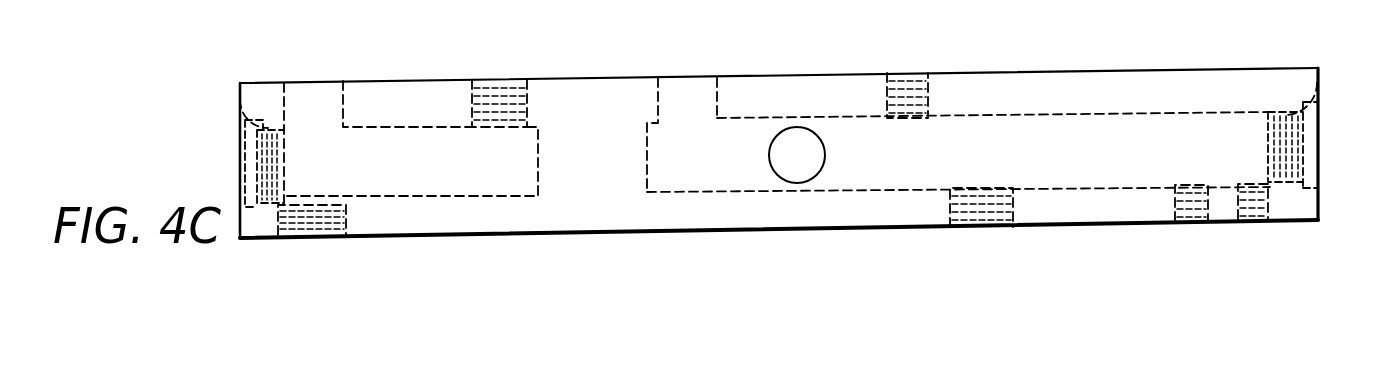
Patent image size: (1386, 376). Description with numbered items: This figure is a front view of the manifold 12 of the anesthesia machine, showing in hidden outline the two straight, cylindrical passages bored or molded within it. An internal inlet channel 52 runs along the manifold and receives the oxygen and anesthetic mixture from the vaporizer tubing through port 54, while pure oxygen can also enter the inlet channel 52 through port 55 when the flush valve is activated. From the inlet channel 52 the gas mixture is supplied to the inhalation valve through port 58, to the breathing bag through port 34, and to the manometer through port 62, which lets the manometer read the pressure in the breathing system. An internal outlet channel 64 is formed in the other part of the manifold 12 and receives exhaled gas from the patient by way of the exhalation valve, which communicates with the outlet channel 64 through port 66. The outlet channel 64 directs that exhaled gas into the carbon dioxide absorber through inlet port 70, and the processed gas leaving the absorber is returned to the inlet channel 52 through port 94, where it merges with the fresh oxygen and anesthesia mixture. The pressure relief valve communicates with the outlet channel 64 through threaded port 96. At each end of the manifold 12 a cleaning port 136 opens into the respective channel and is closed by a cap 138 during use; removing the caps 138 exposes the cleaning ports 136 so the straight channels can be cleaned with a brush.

The manifold 12 is at (1250, 68).
The port 34 is at (788, 182).
The internal inlet channel 52 is at (1093, 115).
The port 54 is at (1258, 227).
The port 55 is at (1190, 227).
The port 58 is at (688, 77).
The port 62 is at (908, 73).
The internal outlet channel 64 is at (375, 127).
The port 66 is at (300, 82).
The inlet port 70 is at (320, 238).
The port 94 is at (983, 230).
The port 96 is at (500, 77).
The cleaning port 136 is at (240, 97).
The cap 138 is at (240, 160).